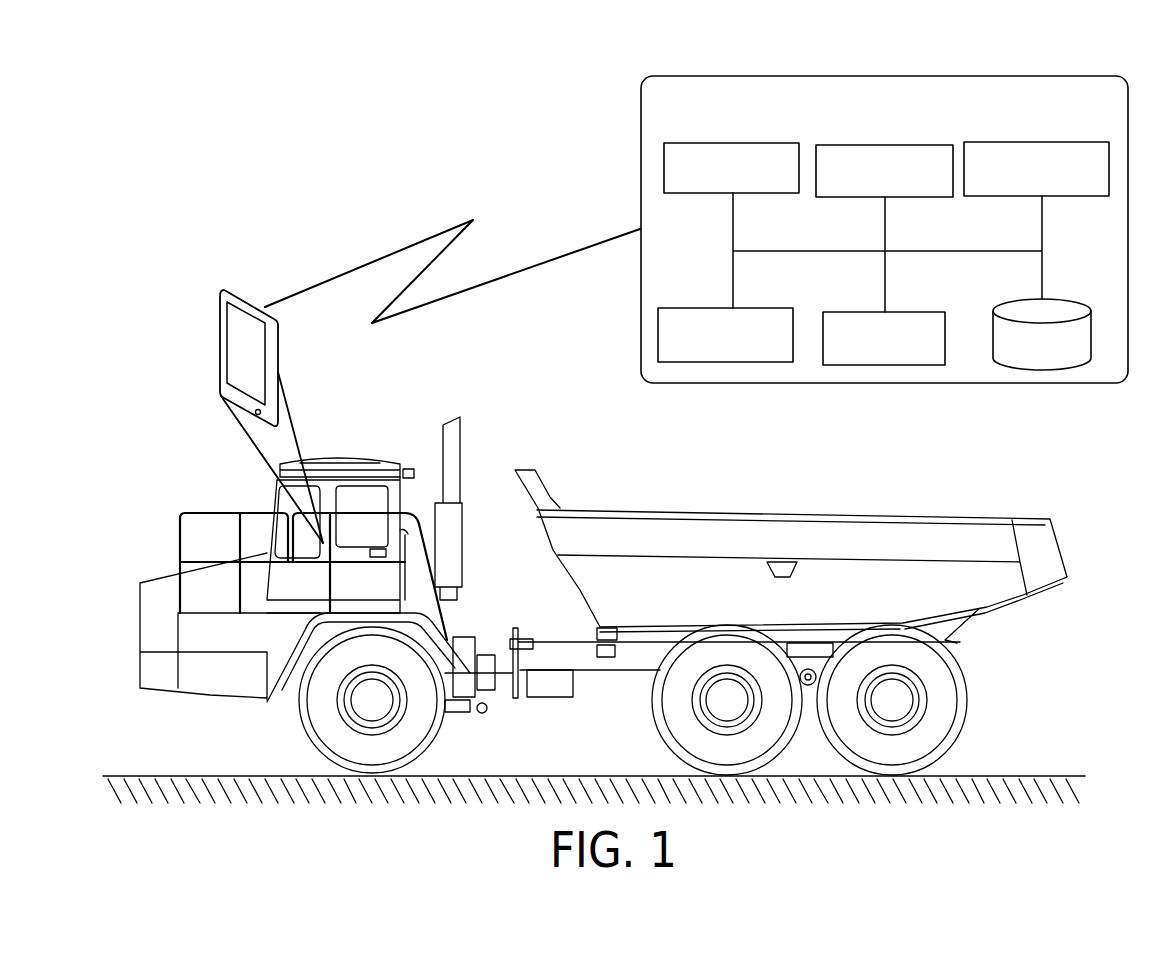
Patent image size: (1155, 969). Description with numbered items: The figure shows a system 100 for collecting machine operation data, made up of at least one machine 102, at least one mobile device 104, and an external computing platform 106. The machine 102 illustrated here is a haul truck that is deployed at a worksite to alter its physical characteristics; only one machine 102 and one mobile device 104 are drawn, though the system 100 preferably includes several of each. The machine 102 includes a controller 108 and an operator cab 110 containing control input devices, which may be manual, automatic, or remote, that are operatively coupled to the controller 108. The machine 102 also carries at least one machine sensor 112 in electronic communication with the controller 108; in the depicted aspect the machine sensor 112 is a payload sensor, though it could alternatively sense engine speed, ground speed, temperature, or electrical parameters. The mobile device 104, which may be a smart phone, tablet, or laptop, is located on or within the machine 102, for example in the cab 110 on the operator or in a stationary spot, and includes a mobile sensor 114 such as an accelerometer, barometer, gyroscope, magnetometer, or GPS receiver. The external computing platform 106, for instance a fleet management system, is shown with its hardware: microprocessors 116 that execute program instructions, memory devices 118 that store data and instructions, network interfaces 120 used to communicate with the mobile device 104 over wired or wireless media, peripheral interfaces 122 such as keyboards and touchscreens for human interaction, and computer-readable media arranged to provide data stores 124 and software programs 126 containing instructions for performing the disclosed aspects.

The system 100 is at (236, 92).
The machine 102 is at (164, 477).
The mobile device 104 is at (230, 378).
The external computing platform 106 is at (914, 85).
The controller 108 is at (302, 547).
The operator cab 110 is at (362, 457).
The machine sensor 112 is at (808, 643).
The mobile sensor 114 is at (237, 363).
The microprocessors 116 is at (827, 145).
The memory devices 118 is at (928, 312).
The network interfaces 120 is at (972, 142).
The peripheral interfaces 122 is at (672, 143).
The data stores 124 is at (1070, 300).
The software programs 126 is at (672, 308).